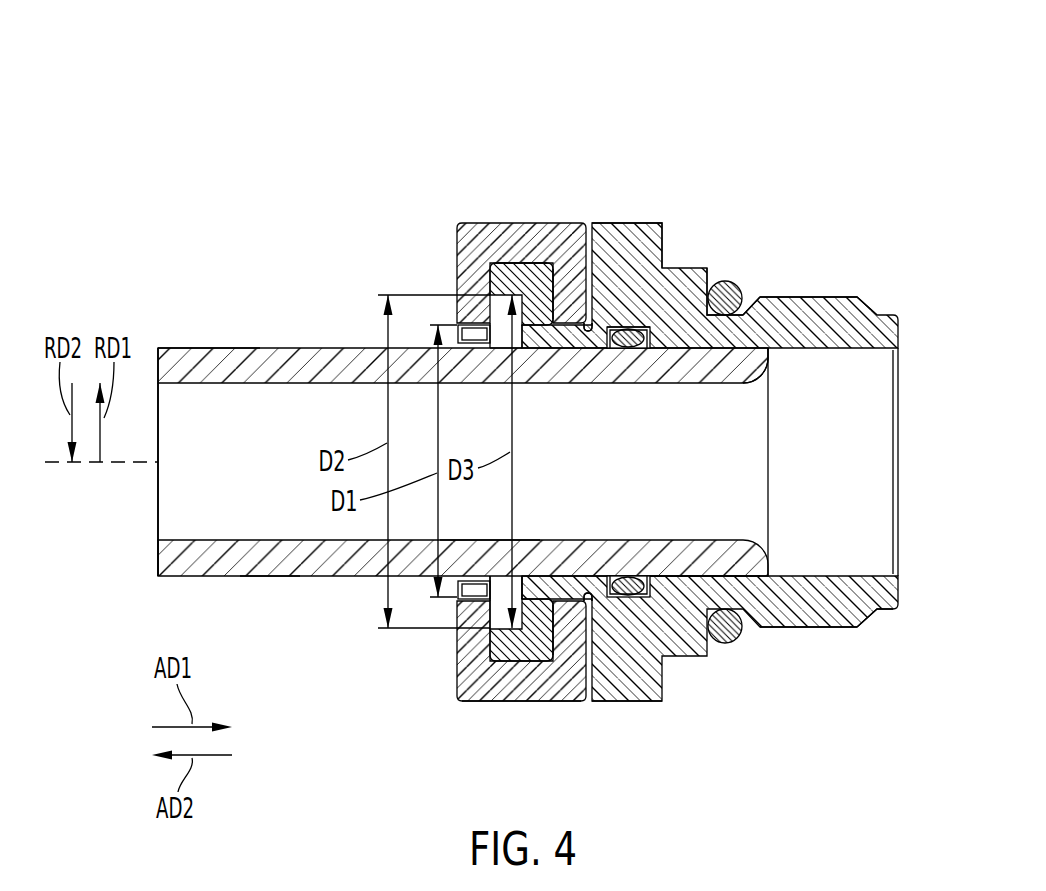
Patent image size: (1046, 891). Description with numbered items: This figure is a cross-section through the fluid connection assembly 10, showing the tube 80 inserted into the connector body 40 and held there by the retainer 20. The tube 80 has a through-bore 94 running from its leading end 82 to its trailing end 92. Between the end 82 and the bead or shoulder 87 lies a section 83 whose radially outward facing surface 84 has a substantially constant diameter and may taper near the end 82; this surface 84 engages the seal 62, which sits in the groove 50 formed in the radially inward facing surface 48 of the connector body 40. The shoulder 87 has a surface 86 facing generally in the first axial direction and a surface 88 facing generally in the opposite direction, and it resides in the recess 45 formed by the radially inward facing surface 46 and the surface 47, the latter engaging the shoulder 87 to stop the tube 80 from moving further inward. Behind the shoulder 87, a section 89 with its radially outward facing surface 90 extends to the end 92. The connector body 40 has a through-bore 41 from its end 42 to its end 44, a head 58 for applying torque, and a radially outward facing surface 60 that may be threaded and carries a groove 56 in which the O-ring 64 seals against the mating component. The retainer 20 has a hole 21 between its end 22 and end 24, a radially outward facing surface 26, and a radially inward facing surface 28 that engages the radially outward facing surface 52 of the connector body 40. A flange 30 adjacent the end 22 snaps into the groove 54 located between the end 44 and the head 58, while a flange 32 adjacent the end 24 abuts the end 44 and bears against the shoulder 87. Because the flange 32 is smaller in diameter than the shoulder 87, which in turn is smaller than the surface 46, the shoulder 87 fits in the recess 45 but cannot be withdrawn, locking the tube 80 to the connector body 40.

The fluid connection assembly 10 is at (280, 50).
The retainer 20 is at (473, 235).
The hole 21 is at (486, 540).
The end 22 is at (616, 697).
The end 24 is at (462, 692).
The radially outward facing surface 26 is at (590, 703).
The radially inward facing surface 28 is at (510, 668).
The flange 30 is at (565, 660).
The flange 32 is at (488, 630).
The connector body 40 is at (887, 333).
The through-bore 41 is at (877, 493).
The end 42 is at (900, 590).
The end 44 is at (497, 300).
The recess 45 is at (492, 655).
The radially inward facing surface 46 is at (520, 275).
The surface 47 is at (557, 300).
The radially inward facing surface 48 is at (815, 578).
The groove 50 is at (620, 328).
The radially outward facing surface 52 is at (508, 262).
The groove 54 is at (590, 325).
The groove 56 is at (746, 318).
The head 58 is at (646, 225).
The radially outward facing surface 60 is at (842, 297).
The seal 62 is at (705, 288).
The O-ring 64 is at (726, 295).
The tube 80 is at (318, 348).
The end 82 is at (772, 375).
The section 83 is at (687, 586).
The radially outward facing surface 84 is at (597, 330).
The surface 86 is at (520, 335).
The shoulder 87 is at (507, 345).
The surface 88 is at (493, 338).
The section 89 is at (263, 612).
The radially outward facing surface 90 is at (232, 346).
The end 92 is at (158, 555).
The through-bore 94 is at (170, 489).